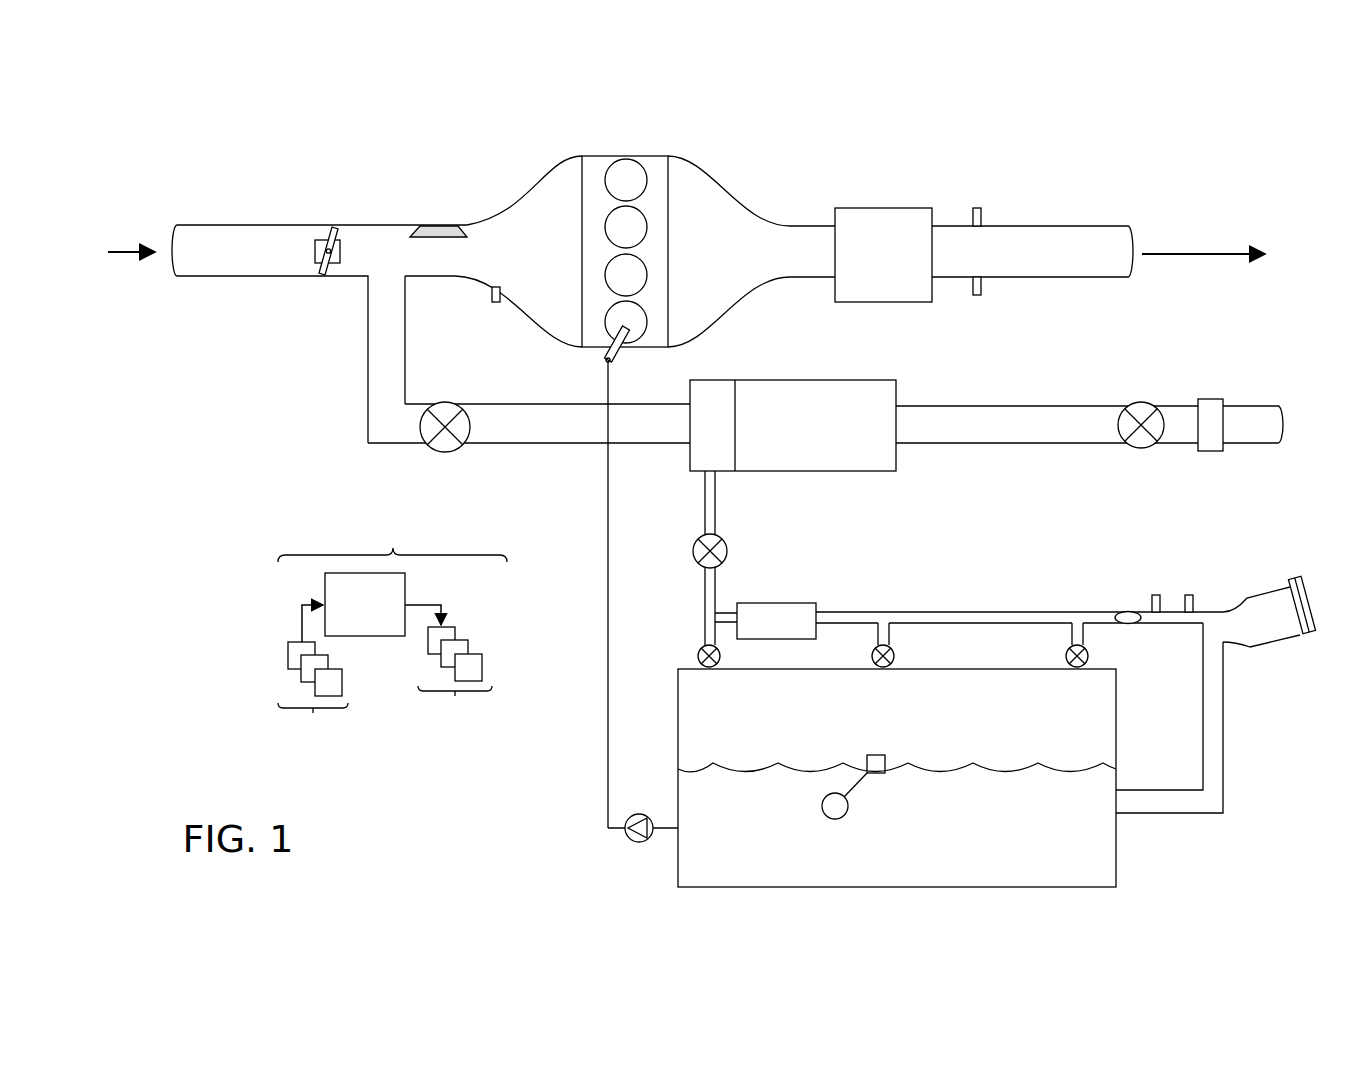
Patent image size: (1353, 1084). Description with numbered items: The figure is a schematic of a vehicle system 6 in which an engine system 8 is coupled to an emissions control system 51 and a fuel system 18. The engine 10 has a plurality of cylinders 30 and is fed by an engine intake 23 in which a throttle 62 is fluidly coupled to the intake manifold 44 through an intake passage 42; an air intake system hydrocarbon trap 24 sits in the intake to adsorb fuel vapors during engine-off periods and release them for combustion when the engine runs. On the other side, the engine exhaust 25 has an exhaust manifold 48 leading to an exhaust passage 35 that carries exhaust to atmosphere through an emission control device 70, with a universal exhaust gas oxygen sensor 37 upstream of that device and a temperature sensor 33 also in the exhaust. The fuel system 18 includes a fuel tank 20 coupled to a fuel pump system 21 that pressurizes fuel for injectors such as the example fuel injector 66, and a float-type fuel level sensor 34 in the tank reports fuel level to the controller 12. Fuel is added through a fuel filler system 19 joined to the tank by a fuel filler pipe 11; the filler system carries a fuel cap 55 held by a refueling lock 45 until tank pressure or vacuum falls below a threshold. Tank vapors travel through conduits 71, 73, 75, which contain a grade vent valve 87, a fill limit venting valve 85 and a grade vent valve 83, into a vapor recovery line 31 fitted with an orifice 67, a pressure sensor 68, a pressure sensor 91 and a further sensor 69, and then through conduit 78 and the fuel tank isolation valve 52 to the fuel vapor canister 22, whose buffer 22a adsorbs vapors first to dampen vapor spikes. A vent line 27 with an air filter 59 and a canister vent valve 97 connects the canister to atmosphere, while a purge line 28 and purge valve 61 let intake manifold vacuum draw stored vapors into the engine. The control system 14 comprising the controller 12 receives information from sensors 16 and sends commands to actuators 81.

The vehicle system 6 is at (190, 158).
The engine system 8 is at (944, 156).
The engine 10 is at (668, 236).
The fuel filler pipe or neck 11 is at (1224, 710).
The controller 12 is at (365, 604).
The control system 14 is at (392, 535).
The sensors 16 is at (313, 679).
The fuel system 18 is at (1161, 848).
The fuel filler system 19 is at (1272, 580).
The fuel tank 20 is at (1116, 762).
The fuel pump system 21 is at (643, 815).
The fuel vapor canister 22 is at (896, 396).
The buffer 22a is at (712, 380).
The engine intake 23 is at (516, 183).
The air intake system hydrocarbon trap 24 is at (433, 226).
The engine exhaust 25 is at (827, 165).
The vent line 27 is at (1089, 424).
The purge line 28 is at (529, 423).
The cylinders 30 is at (641, 170).
The vapor recovery line 31 is at (1055, 612).
The temperature sensor 33 is at (973, 285).
The fuel level sensor 34 is at (492, 295).
The exhaust passage 35 is at (1087, 226).
The universal exhaust gas oxygen sensor 37 is at (973, 216).
The intake passage 42 is at (359, 277).
The intake manifold 44 is at (518, 251).
The refueling lock 45 is at (1307, 633).
The exhaust manifold 48 is at (751, 251).
The emissions control system 51 is at (1268, 362).
The fuel tank isolation valve 52 is at (698, 563).
The fuel cap 55 is at (1299, 578).
The air filter 59 is at (1218, 400).
The purge valve 61 is at (450, 402).
The throttle 62 is at (340, 254).
The fuel injector 66 is at (612, 356).
The orifice 67 is at (1121, 612).
The vapor recovery line pressure sensor 68 is at (1160, 605).
The temperature sensor 69 is at (1193, 605).
The emission control device 70 is at (872, 208).
The conduit 71 is at (717, 632).
The conduit 73 is at (878, 636).
The conduit 75 is at (1072, 636).
The conduit 78 is at (705, 505).
The actuators 81 is at (448, 672).
The grade vent valve 83 is at (1088, 656).
The fill limit venting valve 85 is at (895, 656).
The grade vent valve 87 is at (697, 655).
The pressure sensor 91 is at (816, 607).
The canister vent valve 97 is at (1142, 402).